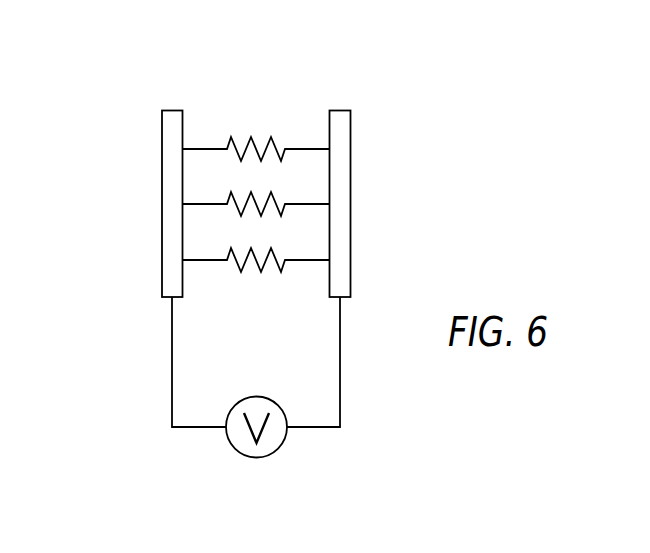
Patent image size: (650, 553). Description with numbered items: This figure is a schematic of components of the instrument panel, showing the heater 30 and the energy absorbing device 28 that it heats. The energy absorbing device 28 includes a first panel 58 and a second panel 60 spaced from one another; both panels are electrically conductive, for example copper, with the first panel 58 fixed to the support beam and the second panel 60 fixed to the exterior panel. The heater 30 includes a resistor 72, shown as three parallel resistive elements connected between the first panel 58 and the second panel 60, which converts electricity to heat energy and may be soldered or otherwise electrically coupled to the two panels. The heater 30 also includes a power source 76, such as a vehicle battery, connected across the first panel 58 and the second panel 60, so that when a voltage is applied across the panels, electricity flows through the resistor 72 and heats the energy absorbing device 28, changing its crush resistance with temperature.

The heater 30 is at (93, 150).
The energy absorbing device 28 is at (477, 137).
The first panel 58 is at (162, 255).
The second panel 60 is at (352, 148).
The resistor 72 is at (303, 148).
The power source 76 is at (248, 458).